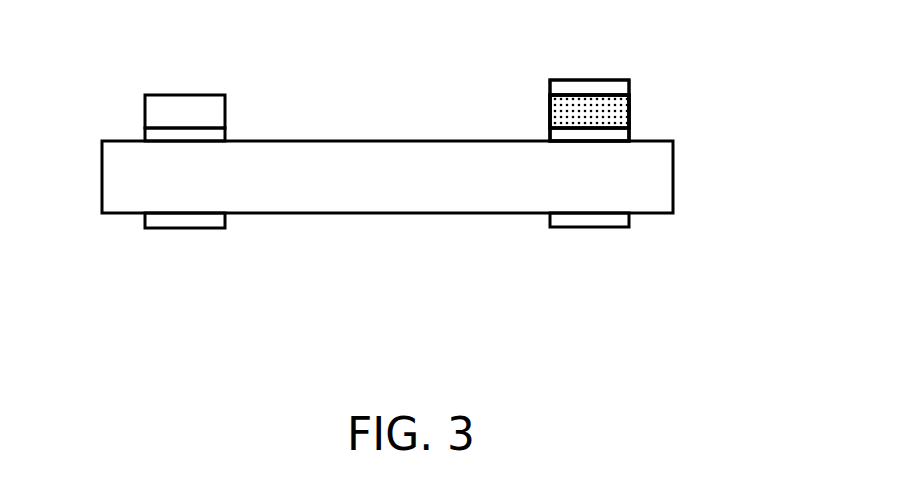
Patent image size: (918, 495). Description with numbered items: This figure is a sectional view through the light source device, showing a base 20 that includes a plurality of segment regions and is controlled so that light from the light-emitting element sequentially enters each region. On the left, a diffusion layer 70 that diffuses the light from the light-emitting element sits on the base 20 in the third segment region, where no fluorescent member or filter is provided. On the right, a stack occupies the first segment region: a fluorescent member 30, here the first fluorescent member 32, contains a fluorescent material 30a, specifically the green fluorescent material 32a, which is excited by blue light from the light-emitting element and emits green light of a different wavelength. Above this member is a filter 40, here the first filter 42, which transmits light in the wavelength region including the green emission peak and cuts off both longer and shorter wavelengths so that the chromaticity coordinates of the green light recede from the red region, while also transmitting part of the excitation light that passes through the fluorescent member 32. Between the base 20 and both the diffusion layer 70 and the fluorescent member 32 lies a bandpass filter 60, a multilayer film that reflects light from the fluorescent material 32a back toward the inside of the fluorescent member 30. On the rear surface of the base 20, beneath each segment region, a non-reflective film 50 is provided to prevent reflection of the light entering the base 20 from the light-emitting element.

The base 20 is at (605, 172).
The diffusion layer 70 is at (187, 112).
The bandpass filter 60 is at (162, 135).
The non-reflective film 50 is at (177, 219).
The filter 40 is at (555, 86).
The first filter 42 is at (593, 87).
The fluorescent member 30 is at (675, 107).
The first fluorescent member 32 is at (607, 112).
The fluorescent material 30a is at (530, 98).
The green fluorescent material 32a is at (565, 111).